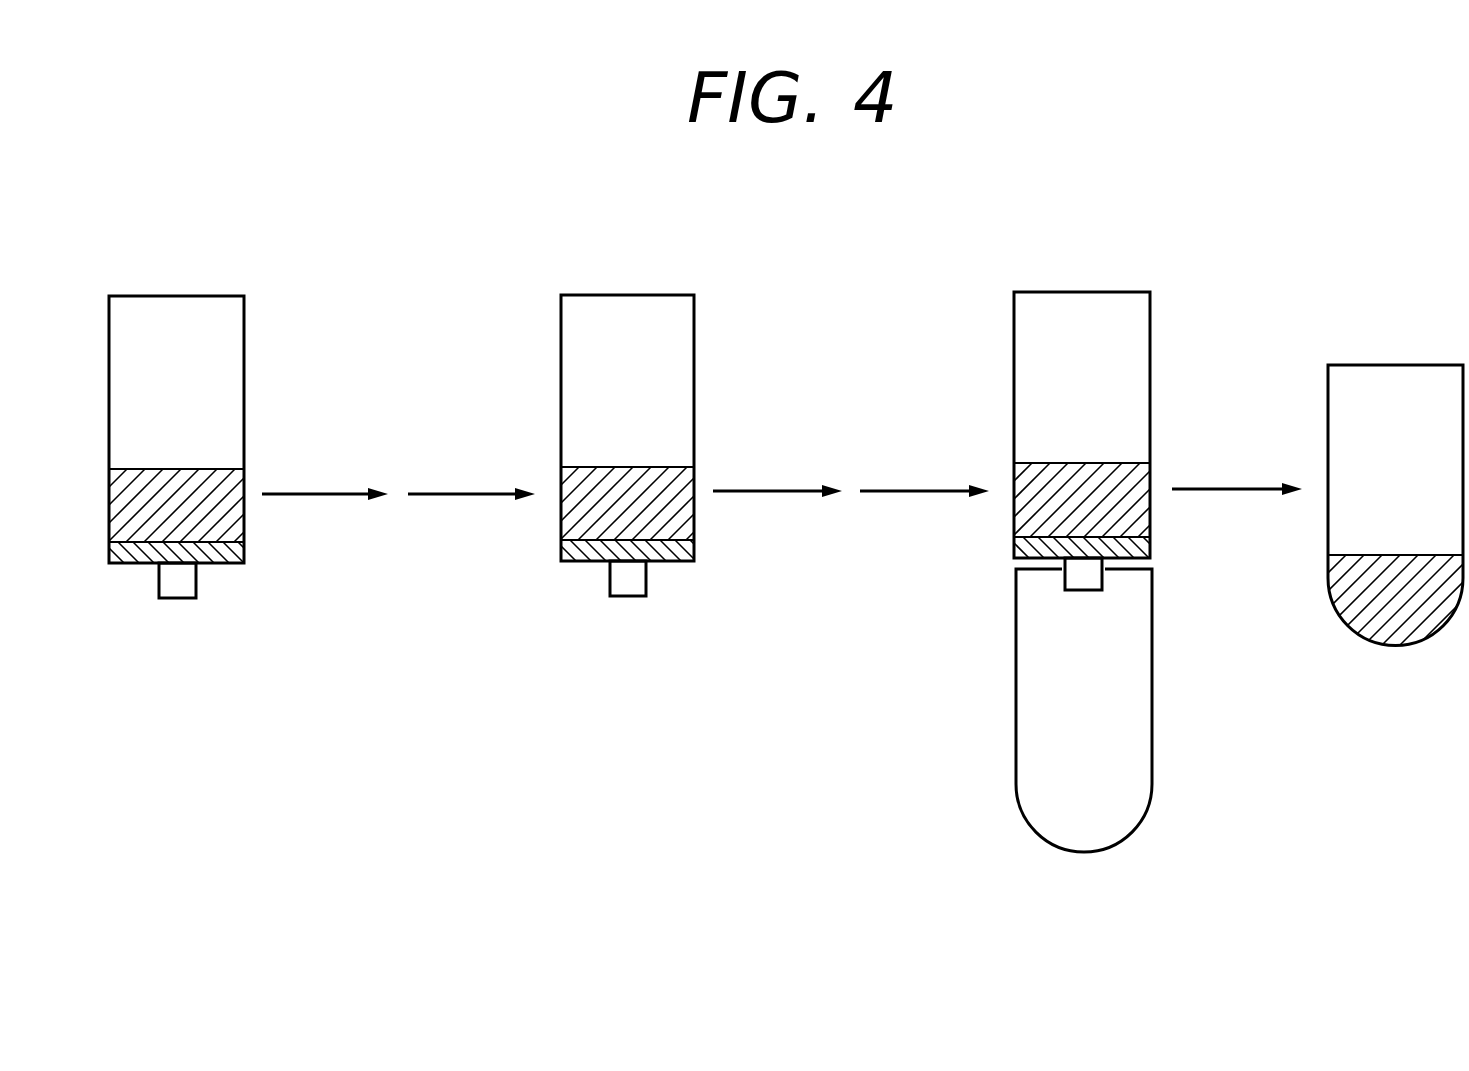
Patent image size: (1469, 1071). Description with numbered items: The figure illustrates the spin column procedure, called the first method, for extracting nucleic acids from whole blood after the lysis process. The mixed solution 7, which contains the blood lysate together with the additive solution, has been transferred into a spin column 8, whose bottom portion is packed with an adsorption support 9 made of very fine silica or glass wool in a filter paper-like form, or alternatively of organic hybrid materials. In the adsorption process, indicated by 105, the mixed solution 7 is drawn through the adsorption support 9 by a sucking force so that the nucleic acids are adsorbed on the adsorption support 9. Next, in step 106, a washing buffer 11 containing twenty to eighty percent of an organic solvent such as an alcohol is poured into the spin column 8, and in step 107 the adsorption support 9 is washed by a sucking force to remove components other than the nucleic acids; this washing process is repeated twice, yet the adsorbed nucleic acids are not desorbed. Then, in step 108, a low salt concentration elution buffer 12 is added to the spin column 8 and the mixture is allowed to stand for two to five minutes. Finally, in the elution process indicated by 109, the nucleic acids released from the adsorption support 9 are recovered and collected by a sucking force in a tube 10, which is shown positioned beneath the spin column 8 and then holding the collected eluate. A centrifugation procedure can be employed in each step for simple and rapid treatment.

The mixed solution 7 is at (232, 521).
The spin column 8 is at (196, 296).
The adsorption support 9 is at (232, 553).
The tube 10 is at (1152, 733).
The washing buffer 11 is at (685, 519).
The elution buffer 12 is at (1140, 519).
The adsorption process step 105 is at (317, 494).
The washing buffer addition step 106 is at (462, 494).
The washing process step 107 is at (768, 491).
The elution buffer addition step 108 is at (915, 491).
The elution process step 109 is at (1225, 489).